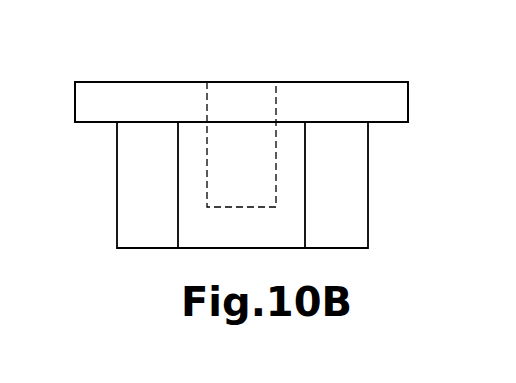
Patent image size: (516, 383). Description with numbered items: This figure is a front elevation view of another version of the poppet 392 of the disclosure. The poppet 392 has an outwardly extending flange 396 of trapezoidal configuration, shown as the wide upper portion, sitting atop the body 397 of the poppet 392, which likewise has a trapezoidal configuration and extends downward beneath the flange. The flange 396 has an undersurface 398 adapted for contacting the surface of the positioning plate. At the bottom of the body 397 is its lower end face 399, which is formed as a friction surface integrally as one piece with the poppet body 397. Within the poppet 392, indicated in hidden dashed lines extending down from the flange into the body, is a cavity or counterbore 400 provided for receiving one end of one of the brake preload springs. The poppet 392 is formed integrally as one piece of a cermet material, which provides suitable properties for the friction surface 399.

The poppet 392 is at (297, 68).
The outwardly extending flange 396 is at (408, 97).
The body 397 is at (368, 197).
The undersurface 398 is at (79, 123).
The lower end face 399 is at (138, 250).
The cavity or counterbore 400 is at (275, 155).